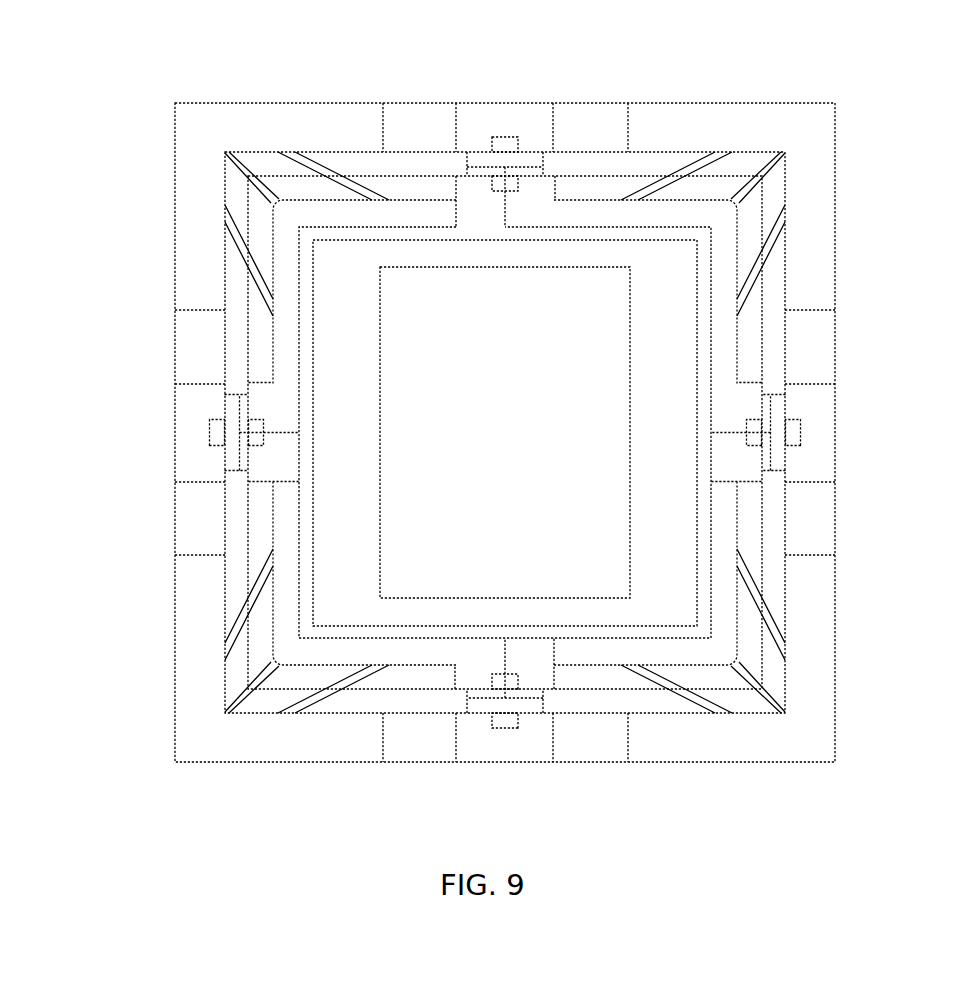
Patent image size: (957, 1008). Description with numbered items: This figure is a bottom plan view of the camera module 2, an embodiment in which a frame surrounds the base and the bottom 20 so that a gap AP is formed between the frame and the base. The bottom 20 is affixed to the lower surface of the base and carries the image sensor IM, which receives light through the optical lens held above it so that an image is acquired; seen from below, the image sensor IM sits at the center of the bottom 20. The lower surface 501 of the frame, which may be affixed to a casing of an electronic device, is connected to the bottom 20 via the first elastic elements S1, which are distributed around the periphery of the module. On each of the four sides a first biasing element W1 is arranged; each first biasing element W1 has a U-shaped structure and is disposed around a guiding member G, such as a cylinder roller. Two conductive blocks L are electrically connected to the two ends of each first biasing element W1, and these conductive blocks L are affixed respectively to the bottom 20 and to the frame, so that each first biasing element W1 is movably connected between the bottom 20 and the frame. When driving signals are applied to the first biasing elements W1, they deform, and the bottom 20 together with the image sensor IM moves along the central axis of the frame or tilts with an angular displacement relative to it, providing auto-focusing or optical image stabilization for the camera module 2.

The camera module 2 is at (98, 55).
The lower surface of the frame 501 is at (413, 130).
The first elastic elements S1 is at (691, 128).
The gap AP is at (235, 582).
The first biasing elements W1 is at (552, 170).
The bottom 20 is at (348, 515).
The image sensor IM is at (583, 345).
The guiding members G is at (531, 158).
The conductive blocks L is at (493, 168).